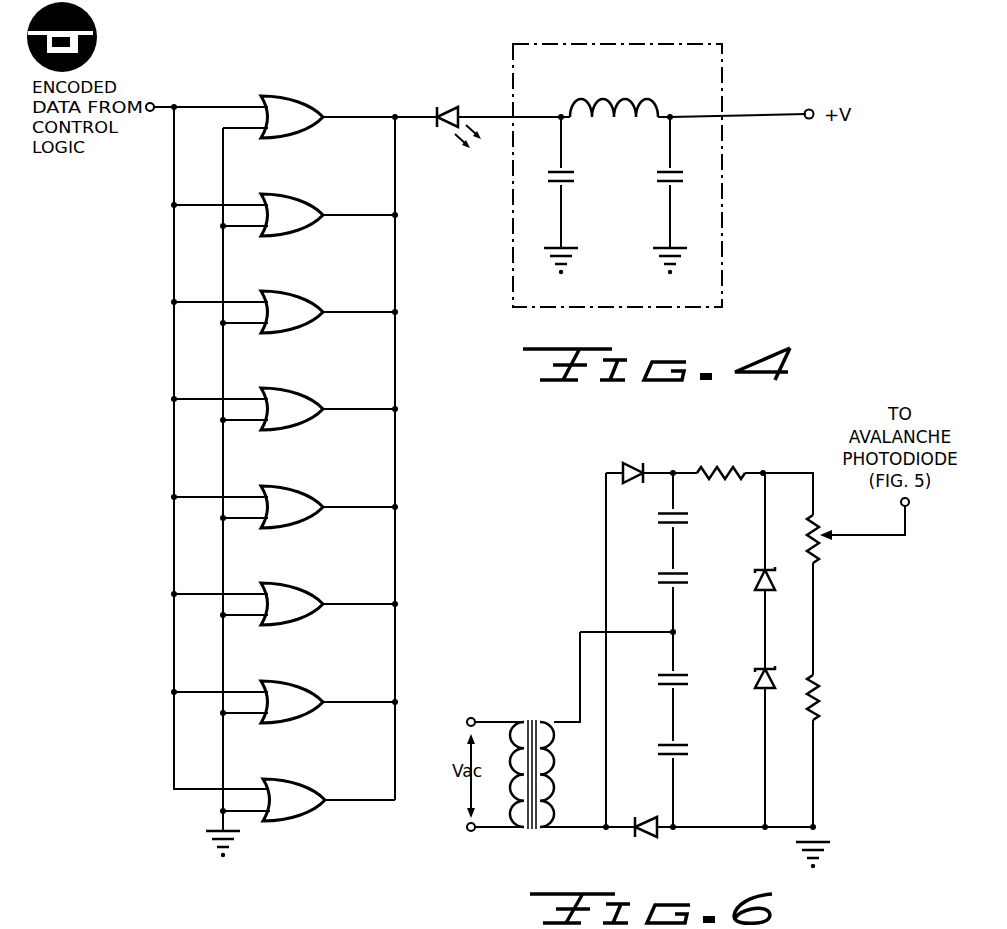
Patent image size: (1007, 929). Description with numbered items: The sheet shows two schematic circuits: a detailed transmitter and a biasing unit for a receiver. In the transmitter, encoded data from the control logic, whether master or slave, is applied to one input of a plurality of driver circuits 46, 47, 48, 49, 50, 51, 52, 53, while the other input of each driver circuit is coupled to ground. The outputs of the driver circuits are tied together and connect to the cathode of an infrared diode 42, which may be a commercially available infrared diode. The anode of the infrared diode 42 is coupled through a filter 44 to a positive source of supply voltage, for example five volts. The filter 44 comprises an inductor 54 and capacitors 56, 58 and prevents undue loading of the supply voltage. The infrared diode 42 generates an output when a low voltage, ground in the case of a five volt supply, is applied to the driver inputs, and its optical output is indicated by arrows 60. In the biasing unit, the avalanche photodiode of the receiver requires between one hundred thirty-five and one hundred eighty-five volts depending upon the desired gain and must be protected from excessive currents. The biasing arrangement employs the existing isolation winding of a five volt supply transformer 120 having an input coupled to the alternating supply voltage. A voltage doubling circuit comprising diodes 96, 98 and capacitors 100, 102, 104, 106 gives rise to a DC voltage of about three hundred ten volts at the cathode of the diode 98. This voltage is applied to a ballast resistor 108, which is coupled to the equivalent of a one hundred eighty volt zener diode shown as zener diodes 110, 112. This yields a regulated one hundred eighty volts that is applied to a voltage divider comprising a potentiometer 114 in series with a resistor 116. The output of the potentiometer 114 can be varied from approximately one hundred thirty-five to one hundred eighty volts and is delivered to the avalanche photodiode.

In FIG. 4, the infrared diode 42 is at (445, 106).
In FIG. 4, the filter 44 is at (700, 50).
In FIG. 4, the driver circuit 46 is at (301, 96).
In FIG. 4, the driver circuit 47 is at (299, 194).
In FIG. 4, the driver circuit 48 is at (298, 291).
In FIG. 4, the driver circuit 49 is at (302, 388).
In FIG. 4, the driver circuit 50 is at (300, 486).
In FIG. 4, the driver circuit 51 is at (304, 583).
In FIG. 4, the driver circuit 52 is at (302, 681).
In FIG. 4, the driver circuit 53 is at (296, 779).
In FIG. 4, the inductor 54 is at (624, 100).
In FIG. 4, the capacitor 56 is at (566, 172).
In FIG. 4, the capacitor 58 is at (667, 172).
In FIG. 4, the arrows 60 is at (458, 136).
In FIG. 6, the diode 96 is at (656, 833).
In FIG. 6, the diode 98 is at (629, 465).
In FIG. 6, the capacitor 100 is at (683, 512).
In FIG. 6, the capacitor 102 is at (683, 572).
In FIG. 6, the capacitor 104 is at (681, 674).
In FIG. 6, the capacitor 106 is at (681, 744).
In FIG. 6, the ballast resistor 108 is at (721, 466).
In FIG. 6, the zener diode 110 is at (776, 575).
In FIG. 6, the zener diode 112 is at (777, 675).
In FIG. 6, the potentiometer 114 is at (826, 565).
In FIG. 6, the resistor 116 is at (821, 681).
In FIG. 6, the supply transformer 120 is at (542, 692).